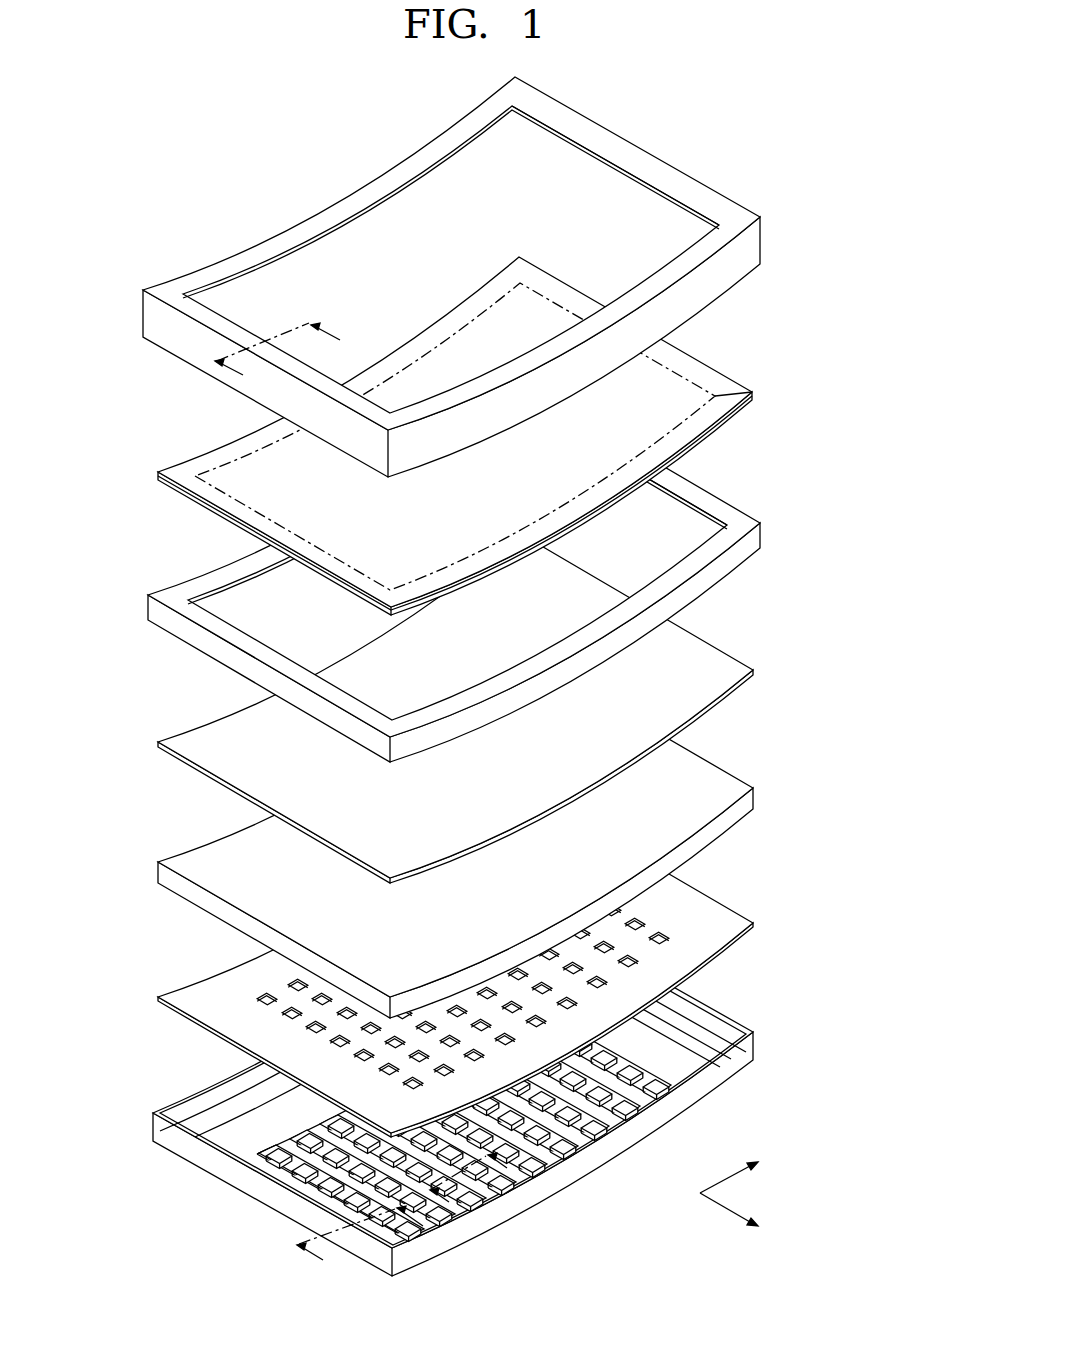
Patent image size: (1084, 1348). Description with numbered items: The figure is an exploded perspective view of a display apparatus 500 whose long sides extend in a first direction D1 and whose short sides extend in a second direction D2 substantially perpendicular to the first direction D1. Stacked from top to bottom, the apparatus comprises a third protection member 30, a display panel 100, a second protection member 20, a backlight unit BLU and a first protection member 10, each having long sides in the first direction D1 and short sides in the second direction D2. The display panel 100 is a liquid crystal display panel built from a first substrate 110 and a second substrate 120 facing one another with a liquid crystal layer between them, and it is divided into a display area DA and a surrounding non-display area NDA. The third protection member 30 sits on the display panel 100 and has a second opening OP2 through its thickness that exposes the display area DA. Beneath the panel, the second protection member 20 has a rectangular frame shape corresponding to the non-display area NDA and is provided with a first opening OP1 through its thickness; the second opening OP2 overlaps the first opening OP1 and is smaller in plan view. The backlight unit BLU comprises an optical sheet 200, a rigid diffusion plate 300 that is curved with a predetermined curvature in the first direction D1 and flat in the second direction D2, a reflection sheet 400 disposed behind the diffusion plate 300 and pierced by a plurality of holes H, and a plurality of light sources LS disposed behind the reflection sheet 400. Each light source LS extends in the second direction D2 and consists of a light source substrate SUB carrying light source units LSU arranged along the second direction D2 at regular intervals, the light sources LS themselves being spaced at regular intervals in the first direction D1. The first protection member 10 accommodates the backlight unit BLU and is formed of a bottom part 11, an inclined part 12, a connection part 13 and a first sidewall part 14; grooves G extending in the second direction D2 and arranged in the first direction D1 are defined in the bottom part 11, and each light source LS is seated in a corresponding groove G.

The display apparatus 500 is at (515, 682).
The third protection member 30 is at (451, 277).
The second opening OP2 is at (600, 206).
The display panel 100 is at (525, 436).
The first substrate 110 is at (752, 400).
The second substrate 120 is at (755, 392).
The display area DA is at (688, 385).
The non-display area NDA is at (730, 385).
The second protection member 20 is at (486, 571).
The first opening OP1 is at (657, 537).
The backlight unit BLU is at (525, 835).
The optical sheet 200 is at (497, 708).
The diffusion plate 300 is at (753, 800).
The reflection sheet 400 is at (497, 962).
The holes H is at (267, 999).
The first protection member 10 is at (504, 1086).
The bottom part 11 is at (703, 1108).
The inclined part 12 is at (683, 1086).
The connection part 13 is at (698, 1058).
The first sidewall part 14 is at (700, 1032).
The light sources LS is at (480, 1106).
The light source units LSU is at (337, 1177).
The light source substrate SUB is at (338, 1193).
The grooves G is at (262, 1152).
The first direction D1 is at (751, 1172).
The second direction D2 is at (751, 1220).